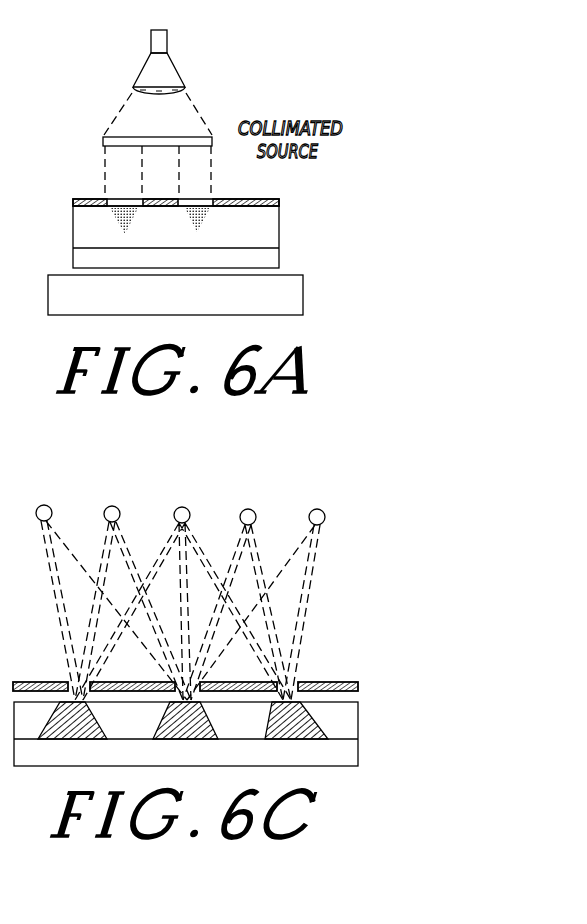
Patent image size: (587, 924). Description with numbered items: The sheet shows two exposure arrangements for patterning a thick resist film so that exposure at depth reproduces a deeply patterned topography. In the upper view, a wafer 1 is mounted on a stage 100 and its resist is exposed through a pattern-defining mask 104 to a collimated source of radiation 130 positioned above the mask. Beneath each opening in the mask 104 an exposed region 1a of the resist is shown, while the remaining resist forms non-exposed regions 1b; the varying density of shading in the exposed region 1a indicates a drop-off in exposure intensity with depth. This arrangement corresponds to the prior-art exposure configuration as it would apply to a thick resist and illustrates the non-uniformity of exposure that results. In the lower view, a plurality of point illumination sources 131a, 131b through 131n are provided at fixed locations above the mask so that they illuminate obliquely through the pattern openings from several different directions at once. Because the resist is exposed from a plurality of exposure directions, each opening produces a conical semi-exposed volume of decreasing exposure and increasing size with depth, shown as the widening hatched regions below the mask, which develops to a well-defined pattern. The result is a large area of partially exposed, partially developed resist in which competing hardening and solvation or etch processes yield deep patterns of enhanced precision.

In FIG. 6A, the source of radiation 130 is at (168, 69).
In FIG. 6A, the pattern-defining mask 104 is at (279, 203).
In FIG. 6A, the wafer 1 is at (270, 258).
In FIG. 6A, the exposed region 1a is at (118, 218).
In FIG. 6A, the non-exposed regions 1b is at (254, 247).
In FIG. 6A, the stage 100 is at (189, 303).
In FIG. 6C, the point illumination source 131a is at (51, 507).
In FIG. 6C, the point illumination source 131b is at (120, 508).
In FIG. 6C, the point illumination source 131n is at (324, 509).